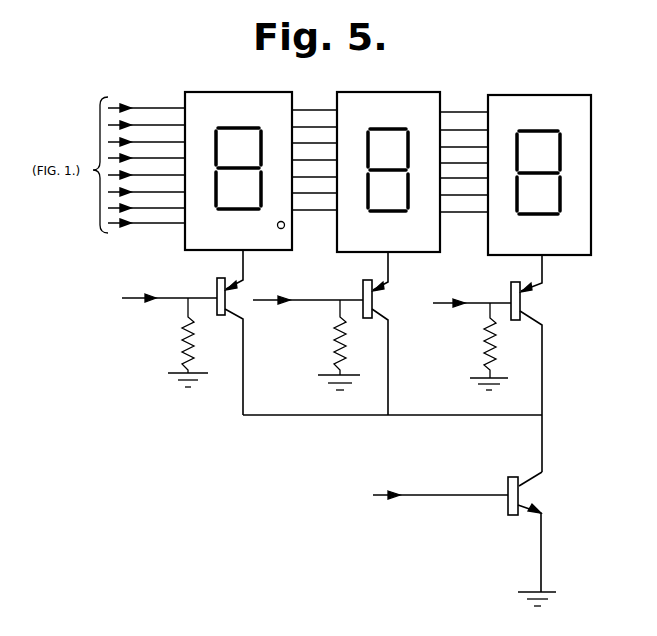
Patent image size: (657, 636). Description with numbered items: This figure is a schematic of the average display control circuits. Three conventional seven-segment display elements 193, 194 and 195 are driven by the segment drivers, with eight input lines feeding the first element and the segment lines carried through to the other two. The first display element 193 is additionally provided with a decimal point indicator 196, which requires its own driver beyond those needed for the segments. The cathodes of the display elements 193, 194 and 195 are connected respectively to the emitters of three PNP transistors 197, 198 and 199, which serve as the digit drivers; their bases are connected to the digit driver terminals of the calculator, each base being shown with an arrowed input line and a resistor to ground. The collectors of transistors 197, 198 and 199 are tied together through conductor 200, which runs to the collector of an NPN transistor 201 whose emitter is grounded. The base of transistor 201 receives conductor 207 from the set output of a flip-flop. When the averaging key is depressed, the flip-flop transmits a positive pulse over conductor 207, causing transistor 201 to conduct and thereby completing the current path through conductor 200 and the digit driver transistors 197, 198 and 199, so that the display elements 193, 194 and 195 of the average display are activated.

The seven-segment display element 193 is at (212, 92).
The seven-segment display element 194 is at (398, 92).
The seven-segment display element 195 is at (519, 95).
The decimal point indicator 196 is at (280, 229).
The PNP transistor 197 is at (217, 286).
The PNP transistor 198 is at (374, 300).
The PNP transistor 199 is at (523, 301).
The conductor 200 is at (312, 416).
The NPN transistor 201 is at (520, 492).
The conductor 207 is at (474, 495).